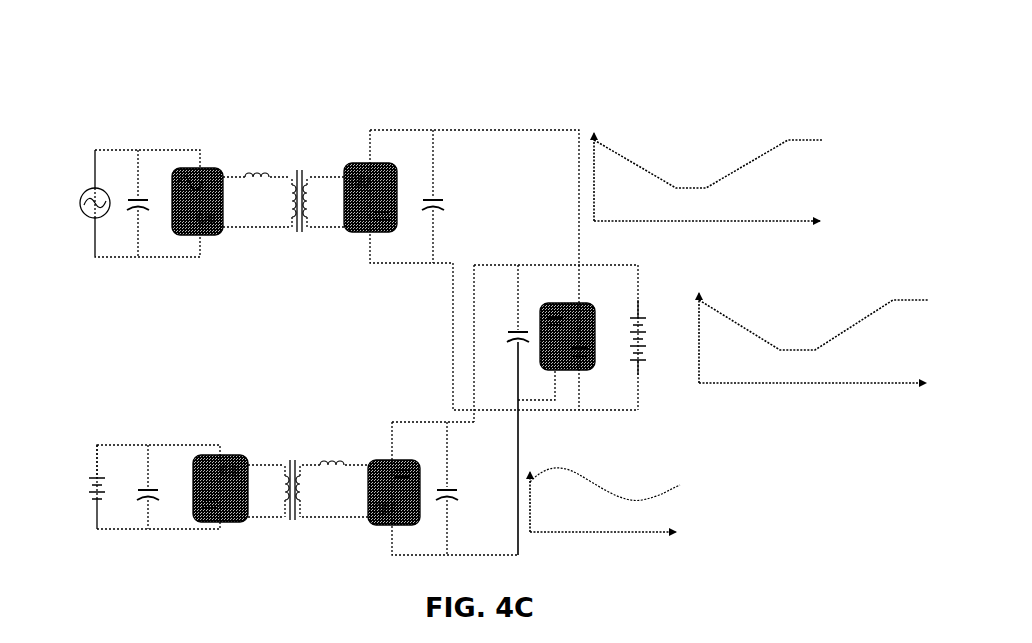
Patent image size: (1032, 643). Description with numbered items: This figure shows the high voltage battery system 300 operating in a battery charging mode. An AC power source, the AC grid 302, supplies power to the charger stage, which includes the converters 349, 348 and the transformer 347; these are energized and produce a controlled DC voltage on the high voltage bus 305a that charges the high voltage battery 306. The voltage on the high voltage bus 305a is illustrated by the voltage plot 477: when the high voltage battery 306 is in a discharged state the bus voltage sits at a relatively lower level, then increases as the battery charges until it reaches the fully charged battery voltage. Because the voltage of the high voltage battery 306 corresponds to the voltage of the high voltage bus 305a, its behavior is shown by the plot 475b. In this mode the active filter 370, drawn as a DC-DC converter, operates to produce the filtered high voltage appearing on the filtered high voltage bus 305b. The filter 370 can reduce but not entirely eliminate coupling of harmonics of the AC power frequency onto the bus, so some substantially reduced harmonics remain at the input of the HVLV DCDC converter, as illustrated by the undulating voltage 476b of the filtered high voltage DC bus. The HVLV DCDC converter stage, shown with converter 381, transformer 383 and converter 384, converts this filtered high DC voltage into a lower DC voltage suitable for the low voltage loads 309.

The high voltage battery system 300 is at (478, 98).
The AC grid 302 is at (86, 188).
The high voltage DC bus 305a is at (562, 130).
The filtered high voltage bus 305b is at (421, 421).
The high voltage battery 306 is at (645, 300).
The low voltage loads 309 is at (97, 474).
The transformer 347 is at (302, 168).
The converter 348 is at (380, 234).
The converter 349 is at (212, 168).
The active filter 370 is at (566, 303).
The DC-AC converter stage 381 is at (383, 526).
The transformer 383 is at (298, 465).
The DC-DC converter stage (low-voltage side) 384 is at (240, 523).
The voltage plot of high voltage battery 475b is at (794, 294).
The undulating voltage of filtered high voltage DC bus 476b is at (610, 468).
The voltage plot of high voltage bus 477 is at (684, 124).